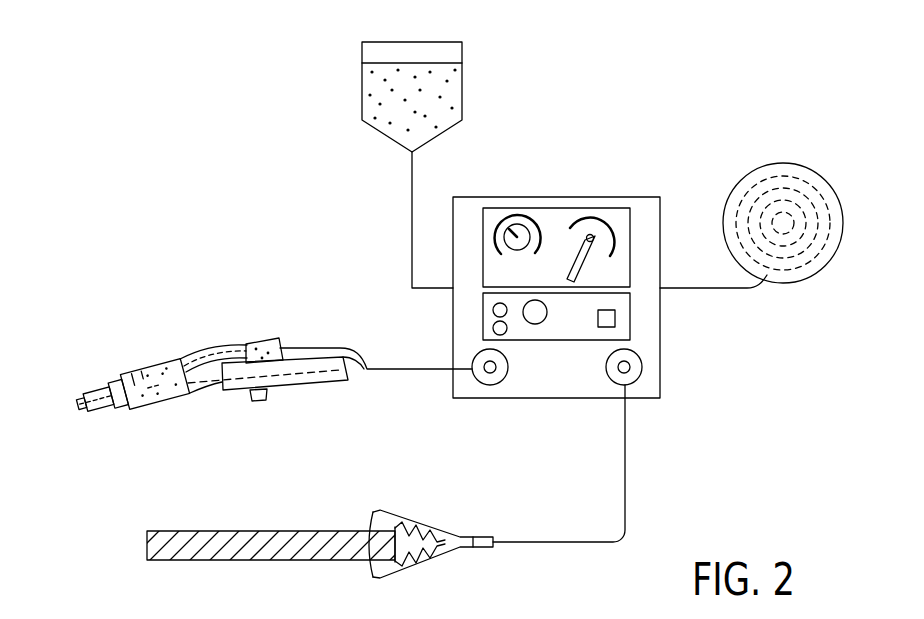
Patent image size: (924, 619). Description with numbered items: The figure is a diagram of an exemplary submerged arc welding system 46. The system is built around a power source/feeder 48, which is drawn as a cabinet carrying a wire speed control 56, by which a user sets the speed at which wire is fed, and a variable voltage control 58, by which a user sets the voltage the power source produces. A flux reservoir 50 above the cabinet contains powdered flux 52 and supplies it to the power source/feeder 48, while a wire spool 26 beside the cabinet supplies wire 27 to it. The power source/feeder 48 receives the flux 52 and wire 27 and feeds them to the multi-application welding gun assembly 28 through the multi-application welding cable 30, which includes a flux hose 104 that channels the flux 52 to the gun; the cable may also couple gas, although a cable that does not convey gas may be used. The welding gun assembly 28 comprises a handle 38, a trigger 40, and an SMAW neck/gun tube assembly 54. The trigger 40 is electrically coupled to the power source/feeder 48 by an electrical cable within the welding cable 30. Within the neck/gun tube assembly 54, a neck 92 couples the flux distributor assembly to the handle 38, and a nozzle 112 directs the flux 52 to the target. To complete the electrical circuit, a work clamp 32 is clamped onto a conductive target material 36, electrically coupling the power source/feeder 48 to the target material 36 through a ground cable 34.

The wire spool 26 is at (727, 248).
The wire 27 is at (802, 192).
The multi-application welding gun assembly 28 is at (273, 362).
The multi-application welding cable 30 is at (390, 372).
The work clamp 32 is at (427, 522).
The ground cable 34 is at (627, 458).
The target material 36 is at (282, 555).
The handle 38 is at (310, 388).
The trigger 40 is at (265, 392).
The submerged arc welding system 46 is at (655, 78).
The power source/feeder 48 is at (560, 269).
The flux reservoir 50 is at (362, 78).
The flux 52 is at (412, 115).
The SMAW neck/gun tube assembly 54 is at (156, 359).
The wire speed control 56 is at (500, 228).
The variable voltage control 58 is at (593, 225).
The neck 92 is at (207, 392).
The flux hose 104 is at (197, 348).
The nozzle 112 is at (90, 398).